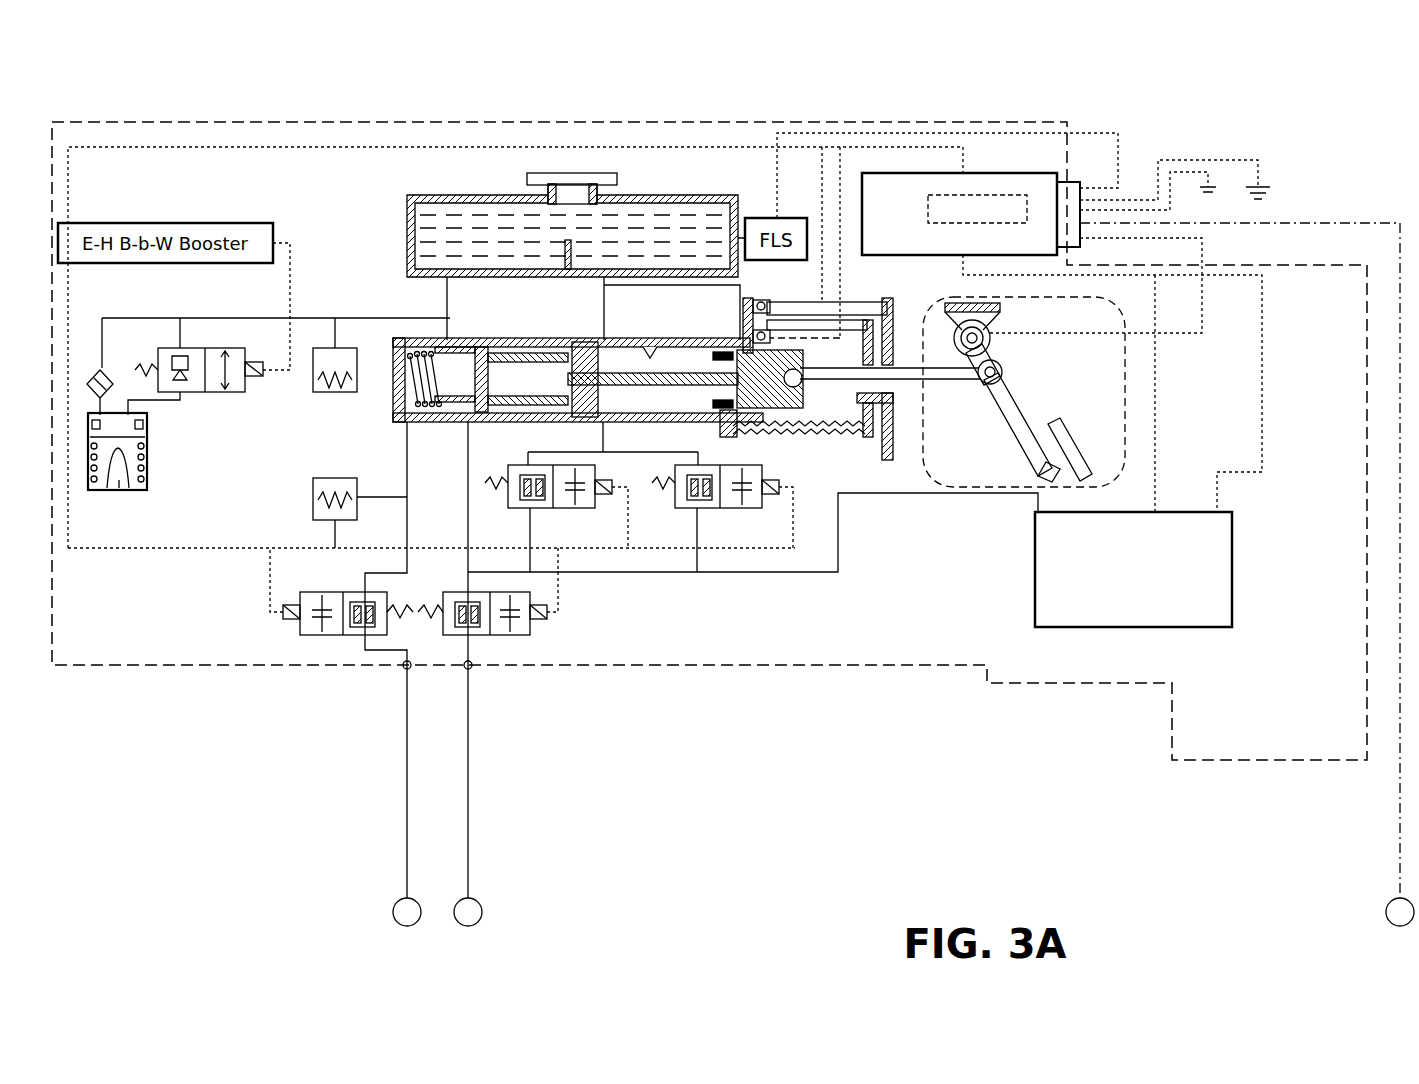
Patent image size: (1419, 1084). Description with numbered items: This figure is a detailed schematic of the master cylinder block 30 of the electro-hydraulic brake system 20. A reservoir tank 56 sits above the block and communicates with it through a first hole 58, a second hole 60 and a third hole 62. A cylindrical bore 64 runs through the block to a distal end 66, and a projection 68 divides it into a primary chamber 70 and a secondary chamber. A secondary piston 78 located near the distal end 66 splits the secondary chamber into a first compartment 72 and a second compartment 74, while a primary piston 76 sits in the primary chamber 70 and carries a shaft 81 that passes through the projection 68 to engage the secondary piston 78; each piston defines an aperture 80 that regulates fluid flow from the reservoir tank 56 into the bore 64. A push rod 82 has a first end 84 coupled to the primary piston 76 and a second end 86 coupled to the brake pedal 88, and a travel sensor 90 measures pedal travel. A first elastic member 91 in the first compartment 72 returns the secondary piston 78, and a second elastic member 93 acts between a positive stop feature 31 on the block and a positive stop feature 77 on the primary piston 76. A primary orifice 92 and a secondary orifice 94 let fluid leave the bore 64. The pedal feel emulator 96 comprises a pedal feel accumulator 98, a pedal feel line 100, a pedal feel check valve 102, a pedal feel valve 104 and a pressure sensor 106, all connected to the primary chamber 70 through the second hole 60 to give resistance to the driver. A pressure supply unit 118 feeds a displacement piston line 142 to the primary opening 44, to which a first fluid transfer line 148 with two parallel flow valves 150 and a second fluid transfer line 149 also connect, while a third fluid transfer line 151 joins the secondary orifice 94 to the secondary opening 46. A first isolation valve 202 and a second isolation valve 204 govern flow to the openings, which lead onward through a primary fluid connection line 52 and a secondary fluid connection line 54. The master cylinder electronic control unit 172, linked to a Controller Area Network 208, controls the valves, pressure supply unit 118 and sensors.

The electro-hydraulic brake system 20 is at (121, 113).
The master cylinder block 30 is at (1275, 266).
The positive stop feature 31 is at (840, 488).
The primary opening 44 is at (470, 670).
The secondary opening 46 is at (405, 670).
The primary fluid connection line 52 is at (468, 718).
The secondary fluid connection line 54 is at (407, 700).
The reservoir tank 56 is at (620, 178).
The first hole 58 is at (430, 352).
The second hole 60 is at (648, 355).
The third hole 62 is at (738, 356).
The bore 64 is at (510, 353).
The distal end 66 is at (397, 350).
The projection 68 is at (585, 348).
The primary chamber 70 is at (680, 376).
The first compartment 72 is at (415, 340).
The second compartment 74 is at (560, 350).
The primary piston 76 is at (775, 303).
The positive stop feature 77 is at (893, 432).
The secondary piston 78 is at (470, 355).
The aperture 80 is at (432, 423).
The shaft 81 is at (697, 346).
The push rod 82 is at (882, 307).
The first end 84 is at (805, 392).
The second end 86 is at (993, 385).
The brake pedal 88 is at (1012, 403).
The travel sensor 90 is at (650, 372).
The elastic member 91 is at (393, 393).
The primary orifice 92 is at (613, 417).
The second elastic member 93 is at (817, 428).
The secondary orifice 94 is at (393, 421).
The pedal feel emulator 96 is at (104, 496).
The pedal feel accumulator 98 is at (165, 507).
The pedal feel line 100 is at (303, 318).
The pedal feel check valve 102 is at (110, 376).
The pedal feel valve 104 is at (196, 393).
The pressure sensor 106 is at (313, 385).
The pressure supply unit 118 is at (1032, 582).
The displacement piston line 142 is at (817, 576).
The first fluid transfer line 148 is at (603, 438).
The second fluid transfer line 149 is at (445, 500).
The flow valve 150 is at (548, 508).
The third fluid transfer line 151 is at (365, 578).
The master cylinder electronic control unit 172 is at (971, 159).
The first isolation valve 202 is at (547, 616).
The second isolation valve 204 is at (283, 614).
The Controller Area Network 208 is at (1000, 205).